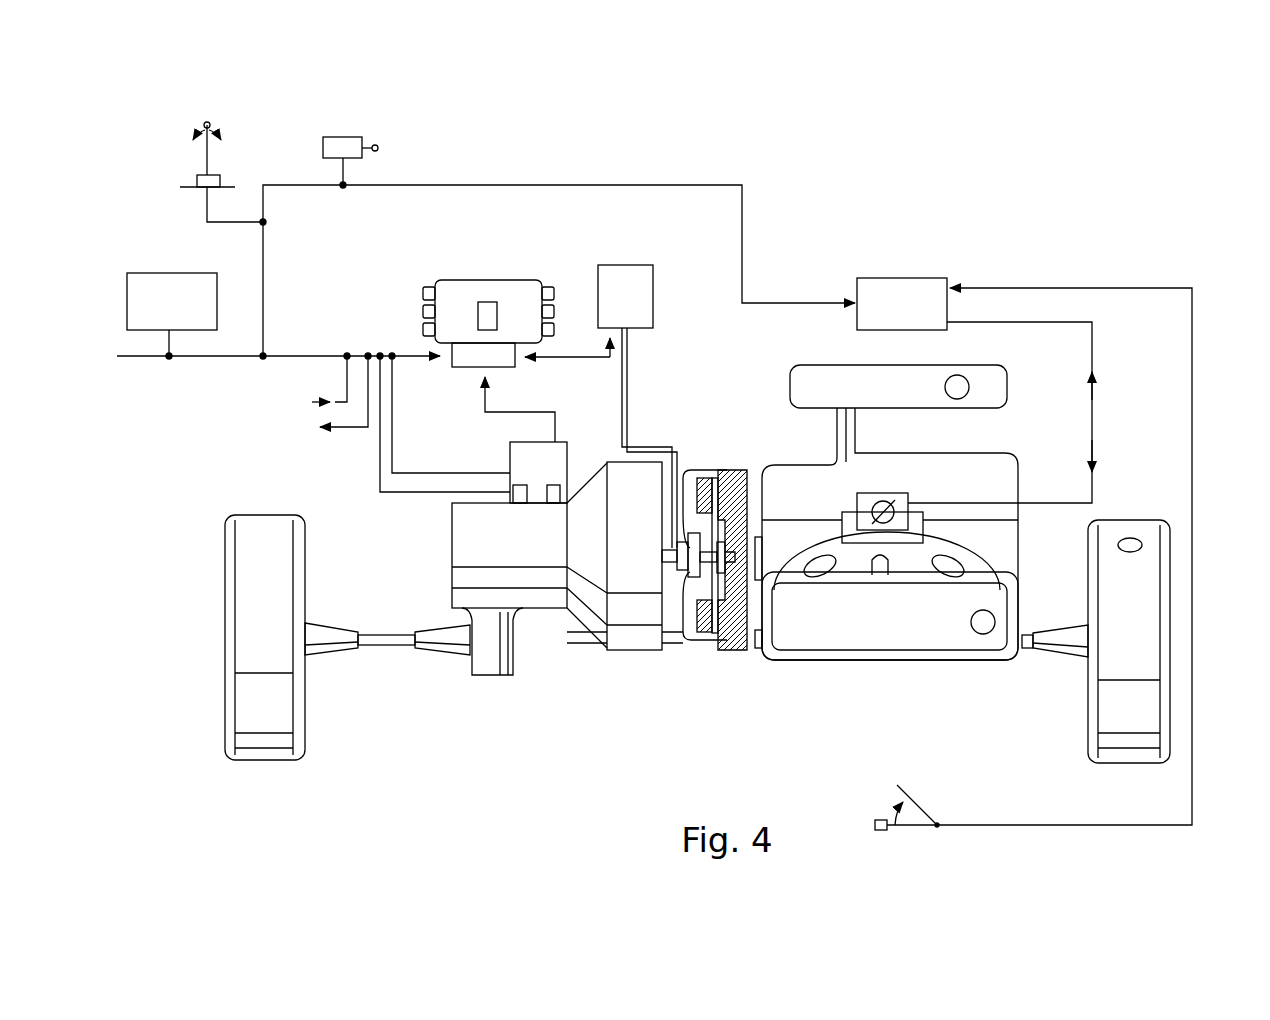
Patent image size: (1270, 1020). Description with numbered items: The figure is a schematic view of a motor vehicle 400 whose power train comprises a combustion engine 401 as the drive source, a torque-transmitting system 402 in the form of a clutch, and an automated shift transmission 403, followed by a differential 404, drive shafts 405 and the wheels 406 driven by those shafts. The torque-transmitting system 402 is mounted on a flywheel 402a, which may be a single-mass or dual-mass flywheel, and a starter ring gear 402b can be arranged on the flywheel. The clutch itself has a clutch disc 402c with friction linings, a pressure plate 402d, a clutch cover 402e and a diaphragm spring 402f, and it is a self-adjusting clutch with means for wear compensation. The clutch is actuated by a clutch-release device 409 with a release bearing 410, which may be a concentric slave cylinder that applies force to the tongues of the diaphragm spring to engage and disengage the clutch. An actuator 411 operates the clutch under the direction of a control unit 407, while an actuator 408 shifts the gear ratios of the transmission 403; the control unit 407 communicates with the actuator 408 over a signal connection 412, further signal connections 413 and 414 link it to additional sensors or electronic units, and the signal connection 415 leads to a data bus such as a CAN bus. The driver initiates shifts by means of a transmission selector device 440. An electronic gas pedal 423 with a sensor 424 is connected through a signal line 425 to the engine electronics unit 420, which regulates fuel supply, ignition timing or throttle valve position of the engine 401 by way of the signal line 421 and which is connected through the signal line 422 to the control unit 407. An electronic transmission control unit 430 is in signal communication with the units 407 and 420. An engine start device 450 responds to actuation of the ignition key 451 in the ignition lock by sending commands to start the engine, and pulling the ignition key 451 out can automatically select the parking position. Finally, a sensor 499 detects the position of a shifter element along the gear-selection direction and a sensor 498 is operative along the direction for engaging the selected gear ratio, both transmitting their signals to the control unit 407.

The motor vehicle 400 is at (1100, 238).
The combustion engine 401 is at (886, 512).
The torque-transmitting system 402 is at (736, 552).
The flywheel 402a is at (745, 652).
The starter ring gear 402b is at (748, 463).
The clutch disc 402c is at (718, 476).
The pressure plate 402d is at (702, 478).
The clutch cover 402e is at (703, 640).
The diaphragm spring 402f is at (692, 520).
The transmission 403 is at (637, 610).
The differential 404 is at (490, 655).
The drive shafts 405 is at (390, 636).
The wheels 406 is at (697, 639).
The control unit 407 is at (458, 293).
The actuator 408 is at (535, 458).
The clutch-release device 409 is at (662, 557).
The release bearing 410 is at (685, 580).
The actuator 411 is at (620, 280).
The signal connection 412 is at (441, 471).
The signal connection 413 is at (340, 430).
The signal connection 414 is at (335, 400).
The signal connection 415 is at (327, 356).
The engine electronics unit 420 is at (902, 304).
The signal line 421 is at (1093, 410).
The signal line 422 is at (527, 185).
The electronic gas pedal 423 is at (920, 806).
The sensor 424 is at (878, 822).
The signal line 425 is at (1193, 410).
The electronic transmission control unit 430 is at (172, 314).
The transmission selector device 440 is at (212, 124).
The ignition lock 450 is at (338, 140).
The ignition key 451 is at (380, 150).
The sensor 498 is at (553, 502).
The sensor 499 is at (517, 502).